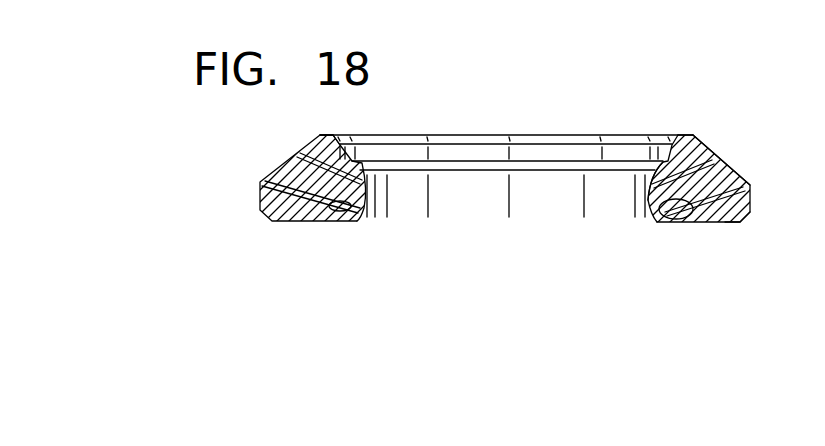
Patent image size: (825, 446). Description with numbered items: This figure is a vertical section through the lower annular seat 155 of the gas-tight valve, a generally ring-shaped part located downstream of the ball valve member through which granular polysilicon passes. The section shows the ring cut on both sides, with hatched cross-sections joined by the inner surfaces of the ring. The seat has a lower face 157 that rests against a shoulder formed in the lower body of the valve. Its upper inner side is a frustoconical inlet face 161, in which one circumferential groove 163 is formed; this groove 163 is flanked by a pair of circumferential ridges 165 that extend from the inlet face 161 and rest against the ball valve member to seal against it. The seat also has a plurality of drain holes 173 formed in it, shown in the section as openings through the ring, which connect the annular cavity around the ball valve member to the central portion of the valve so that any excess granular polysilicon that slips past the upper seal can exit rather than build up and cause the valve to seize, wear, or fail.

The lower annular seat 155 is at (283, 223).
The lower face 157 is at (724, 223).
The frustoconical inlet face 161 is at (696, 152).
The circumferential groove 163 is at (669, 163).
The circumferential ridges 165 is at (323, 137).
The drain holes 173 is at (358, 213).